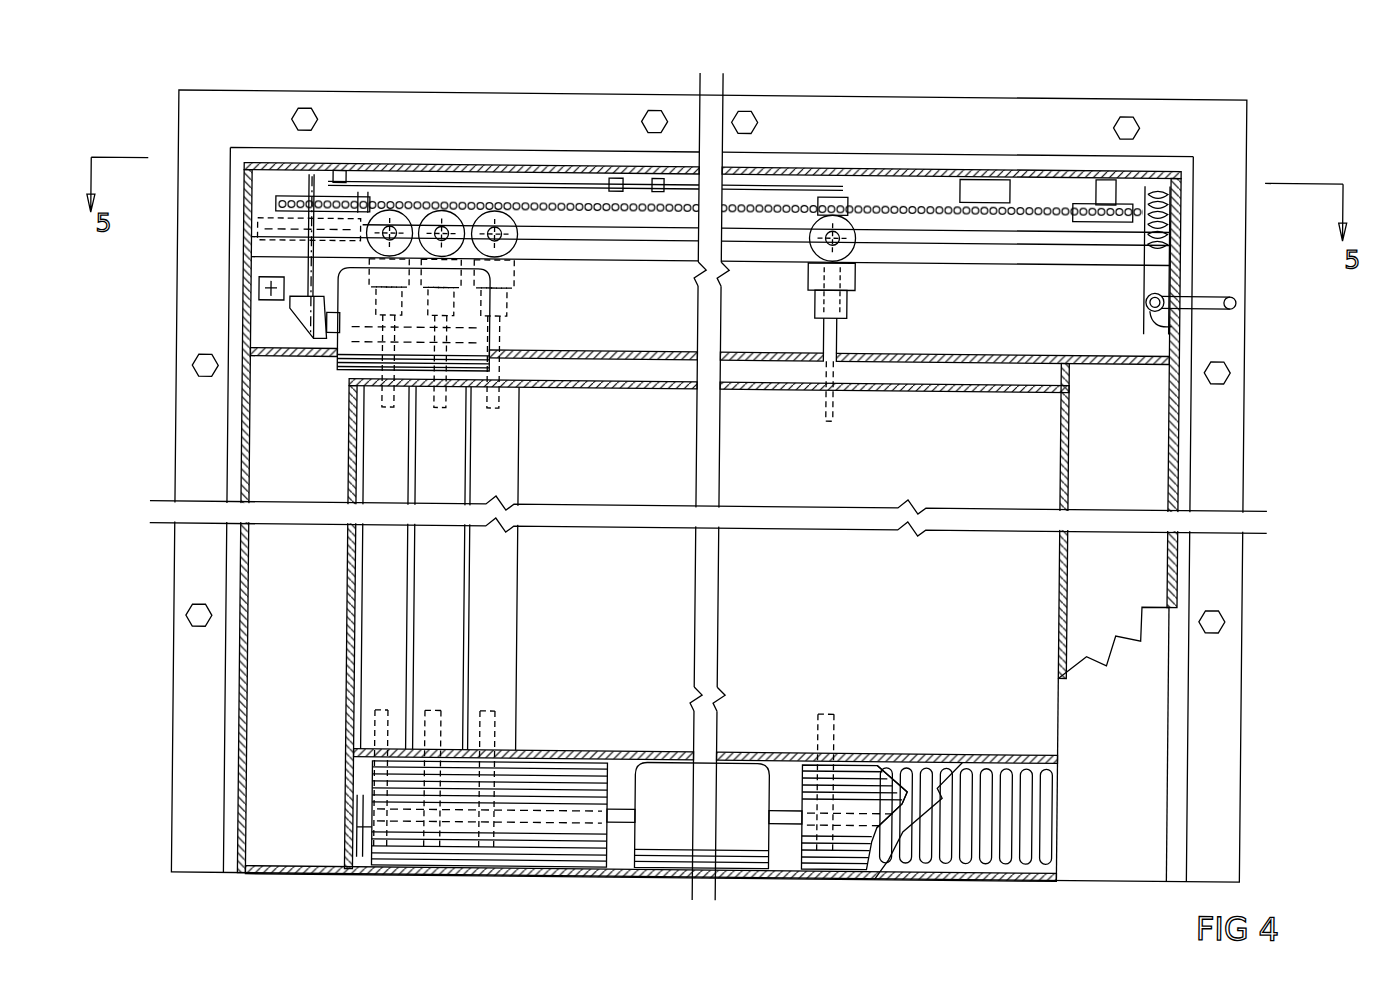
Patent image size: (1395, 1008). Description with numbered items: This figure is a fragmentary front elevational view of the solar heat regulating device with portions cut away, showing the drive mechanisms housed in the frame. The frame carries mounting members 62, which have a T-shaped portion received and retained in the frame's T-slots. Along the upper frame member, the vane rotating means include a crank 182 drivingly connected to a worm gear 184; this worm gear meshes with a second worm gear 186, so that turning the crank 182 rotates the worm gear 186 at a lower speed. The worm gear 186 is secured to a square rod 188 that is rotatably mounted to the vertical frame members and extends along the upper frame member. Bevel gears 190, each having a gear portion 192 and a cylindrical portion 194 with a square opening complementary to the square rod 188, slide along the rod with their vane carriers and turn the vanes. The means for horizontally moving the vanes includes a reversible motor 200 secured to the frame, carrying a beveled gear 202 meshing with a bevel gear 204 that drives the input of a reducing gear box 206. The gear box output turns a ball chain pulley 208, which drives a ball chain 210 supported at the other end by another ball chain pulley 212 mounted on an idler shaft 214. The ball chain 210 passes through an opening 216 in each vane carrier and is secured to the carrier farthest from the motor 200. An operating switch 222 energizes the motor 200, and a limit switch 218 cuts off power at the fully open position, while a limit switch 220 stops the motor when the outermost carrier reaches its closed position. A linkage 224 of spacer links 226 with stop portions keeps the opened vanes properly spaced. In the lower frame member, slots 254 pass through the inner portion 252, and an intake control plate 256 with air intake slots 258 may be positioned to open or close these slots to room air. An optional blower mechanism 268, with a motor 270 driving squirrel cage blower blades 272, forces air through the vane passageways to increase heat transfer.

The mounting members 62 is at (568, 108).
The crank 182 is at (1163, 296).
The worm gear 184 is at (1172, 322).
The worm gear 186 is at (1153, 203).
The square rod 188 is at (907, 233).
The bevel gear 190 is at (809, 248).
The gear portion 192 is at (847, 233).
The cylindrical portion 194 is at (804, 266).
The reversible motor 200 is at (338, 372).
The beveled gear 202 is at (325, 328).
The bevel gear 204 is at (288, 307).
The reducing gear box 206 is at (323, 215).
The ball chain pulley 208 is at (283, 198).
The ball chain 210 is at (272, 212).
The ball chain pulley 212 is at (1125, 207).
The idler shaft 214 is at (1112, 187).
The opening 216 is at (495, 203).
The limit switch 218 is at (357, 197).
The limit switch 220 is at (980, 190).
The operating switch 222 is at (257, 289).
The linkage 224 is at (533, 183).
The spacer links 226 is at (653, 185).
The inner portion 252 is at (935, 870).
The slots 254 is at (1052, 857).
The intake control plate 256 is at (882, 856).
The air intake slots 258 is at (885, 860).
The blower mechanism 268 is at (676, 889).
The motor 270 is at (730, 848).
The blower blades 272 is at (540, 858).